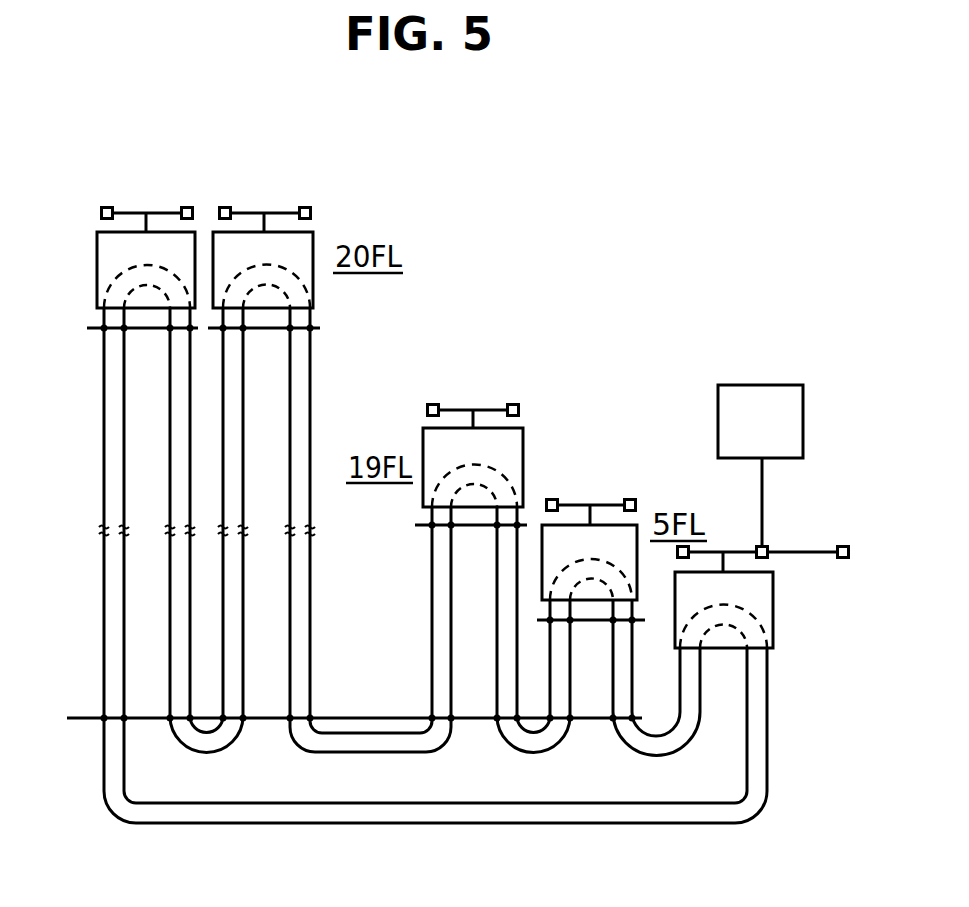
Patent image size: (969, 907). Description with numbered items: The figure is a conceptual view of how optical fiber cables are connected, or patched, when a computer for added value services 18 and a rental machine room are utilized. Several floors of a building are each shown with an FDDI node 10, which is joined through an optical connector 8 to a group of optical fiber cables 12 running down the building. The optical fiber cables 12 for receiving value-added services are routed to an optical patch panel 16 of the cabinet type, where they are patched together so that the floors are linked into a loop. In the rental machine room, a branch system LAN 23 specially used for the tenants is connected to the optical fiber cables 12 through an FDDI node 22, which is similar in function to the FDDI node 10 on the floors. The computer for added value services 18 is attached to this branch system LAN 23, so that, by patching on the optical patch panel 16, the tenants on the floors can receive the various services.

The FDDI node 10 is at (136, 265).
The optical connector 8 is at (104, 328).
The group of optical fiber cables 12 is at (104, 473).
The optical patch panel 16 is at (104, 718).
The computer for added value services 18 is at (718, 416).
The FDDI node 22 is at (719, 607).
The branch system LAN in rental machine room 23 is at (806, 552).